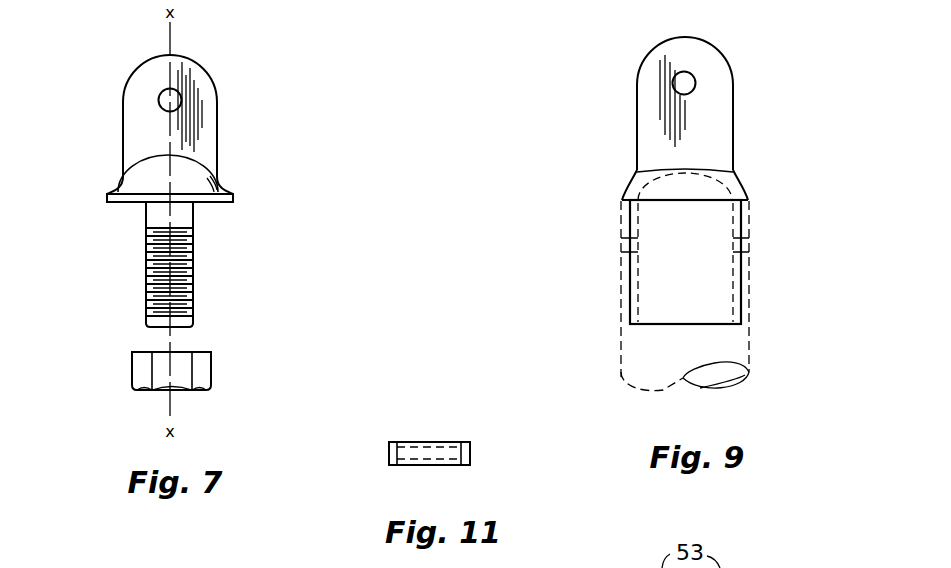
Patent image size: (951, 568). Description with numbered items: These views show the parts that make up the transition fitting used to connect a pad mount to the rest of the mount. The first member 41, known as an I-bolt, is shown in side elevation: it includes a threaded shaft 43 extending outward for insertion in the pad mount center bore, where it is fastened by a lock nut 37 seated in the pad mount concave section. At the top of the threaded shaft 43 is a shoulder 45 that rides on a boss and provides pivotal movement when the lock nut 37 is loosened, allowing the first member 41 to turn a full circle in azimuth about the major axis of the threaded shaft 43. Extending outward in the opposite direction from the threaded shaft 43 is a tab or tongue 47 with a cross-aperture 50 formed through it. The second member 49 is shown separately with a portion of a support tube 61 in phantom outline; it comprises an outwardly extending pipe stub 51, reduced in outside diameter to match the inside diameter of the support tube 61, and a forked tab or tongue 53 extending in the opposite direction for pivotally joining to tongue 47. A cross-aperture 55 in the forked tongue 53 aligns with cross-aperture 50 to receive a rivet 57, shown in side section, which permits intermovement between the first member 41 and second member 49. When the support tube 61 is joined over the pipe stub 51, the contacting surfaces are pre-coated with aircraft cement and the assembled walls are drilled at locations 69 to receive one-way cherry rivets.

In FIG. 7, the lock nut 37 is at (203, 365).
In FIG. 7, the first member 41 is at (140, 155).
In FIG. 7, the threaded shaft 43 is at (146, 276).
In FIG. 7, the shoulder 45 is at (233, 198).
In FIG. 7, the tab or tongue 47 is at (203, 88).
In FIG. 7, the cross-aperture 50 is at (158, 100).
In FIG. 9, the second member 49 is at (725, 127).
In FIG. 9, the pipe stub 51 is at (633, 292).
In FIG. 9, the forked tab or tongue 53 is at (643, 100).
In FIG. 9, the cross-aperture 55 is at (682, 78).
In FIG. 11, the rivet 57 is at (423, 442).
In FIG. 9, the support tube 61 is at (752, 307).
In FIG. 9, the drilled locations 69 is at (621, 244).